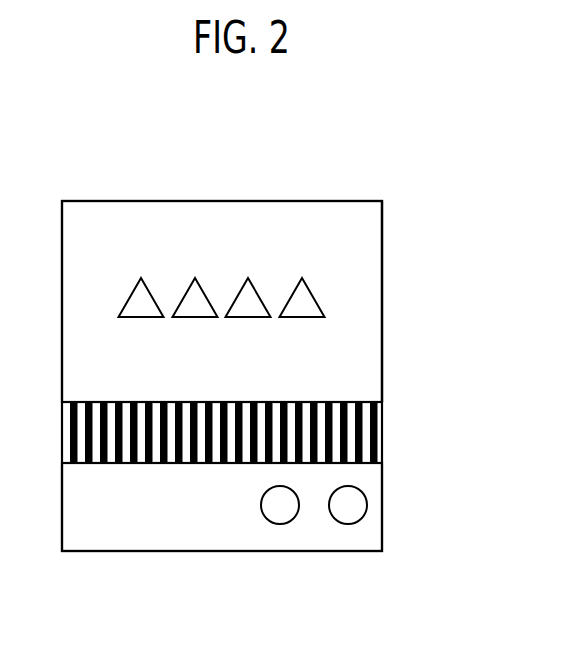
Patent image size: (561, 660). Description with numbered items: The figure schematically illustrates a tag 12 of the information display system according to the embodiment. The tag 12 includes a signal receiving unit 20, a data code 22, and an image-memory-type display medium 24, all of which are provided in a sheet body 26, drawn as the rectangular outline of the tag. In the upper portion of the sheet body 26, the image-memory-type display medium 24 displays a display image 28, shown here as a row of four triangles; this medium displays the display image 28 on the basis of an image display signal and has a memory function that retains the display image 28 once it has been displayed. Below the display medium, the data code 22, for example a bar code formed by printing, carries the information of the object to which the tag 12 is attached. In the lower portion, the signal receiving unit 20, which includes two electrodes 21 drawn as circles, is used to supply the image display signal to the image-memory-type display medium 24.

The tag 12 is at (388, 178).
The signal receiving unit 20 is at (260, 525).
The electrodes 21 is at (347, 512).
The data code 22 is at (368, 433).
The image-memory-type display medium 24 is at (358, 330).
The sheet body 26 is at (382, 256).
The display image 28 is at (231, 270).